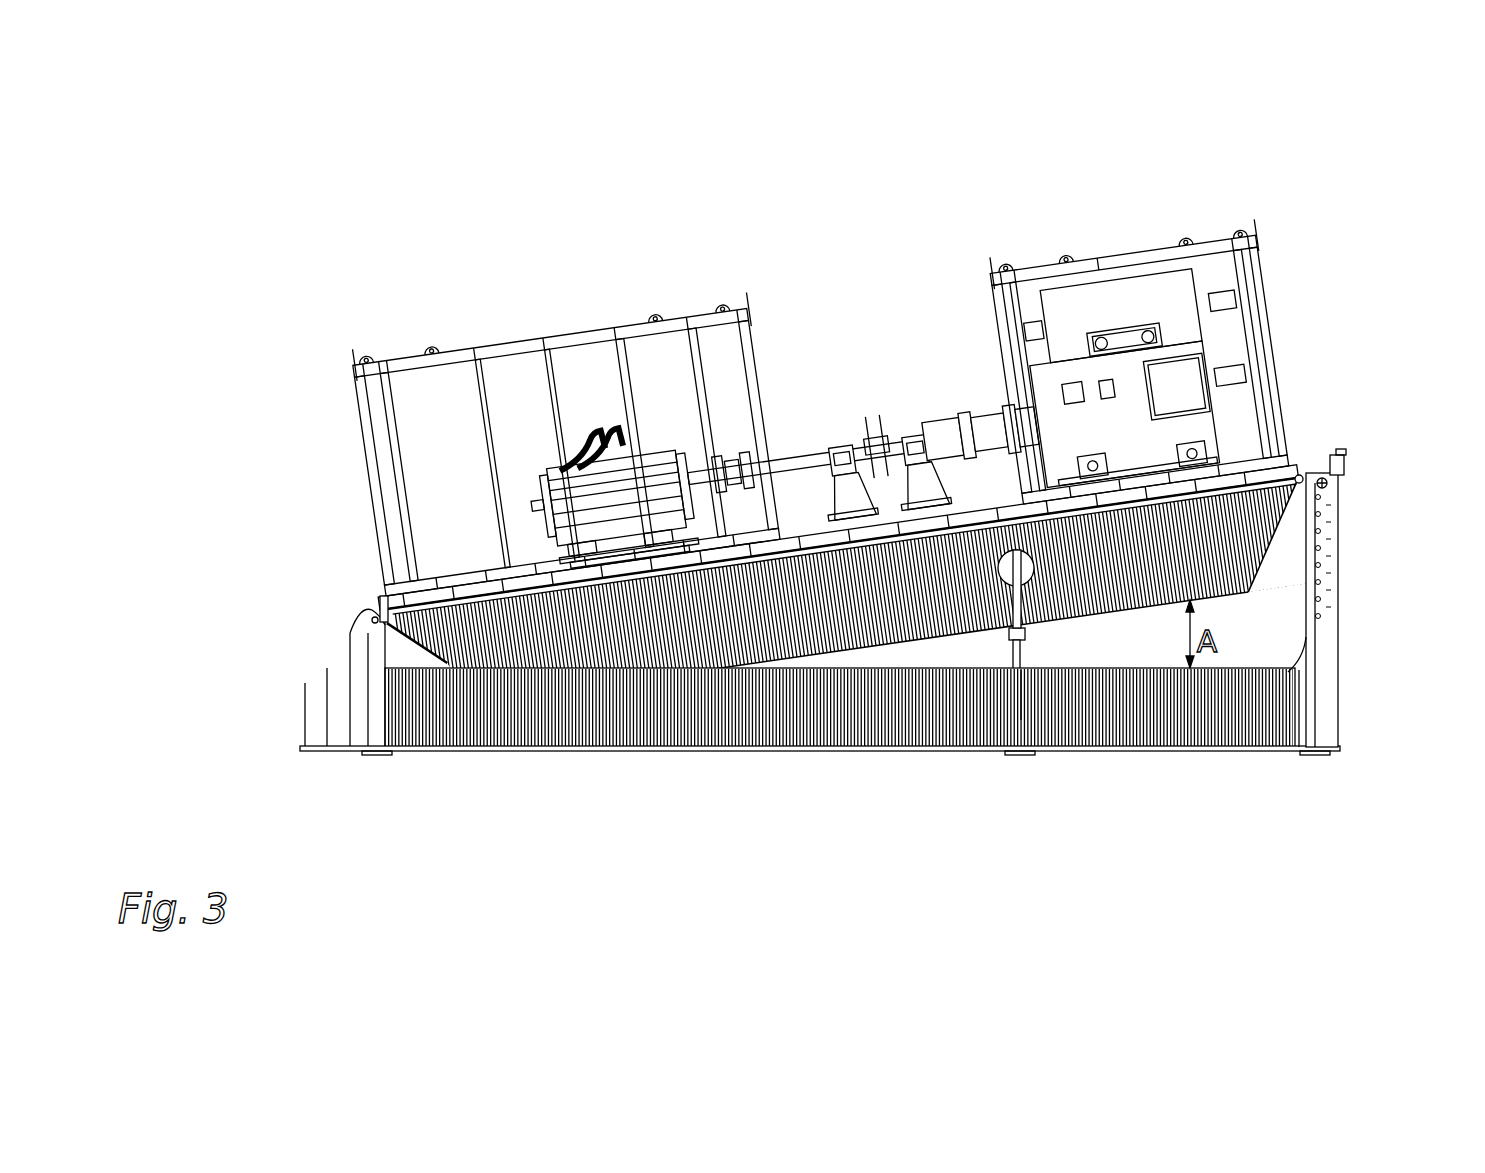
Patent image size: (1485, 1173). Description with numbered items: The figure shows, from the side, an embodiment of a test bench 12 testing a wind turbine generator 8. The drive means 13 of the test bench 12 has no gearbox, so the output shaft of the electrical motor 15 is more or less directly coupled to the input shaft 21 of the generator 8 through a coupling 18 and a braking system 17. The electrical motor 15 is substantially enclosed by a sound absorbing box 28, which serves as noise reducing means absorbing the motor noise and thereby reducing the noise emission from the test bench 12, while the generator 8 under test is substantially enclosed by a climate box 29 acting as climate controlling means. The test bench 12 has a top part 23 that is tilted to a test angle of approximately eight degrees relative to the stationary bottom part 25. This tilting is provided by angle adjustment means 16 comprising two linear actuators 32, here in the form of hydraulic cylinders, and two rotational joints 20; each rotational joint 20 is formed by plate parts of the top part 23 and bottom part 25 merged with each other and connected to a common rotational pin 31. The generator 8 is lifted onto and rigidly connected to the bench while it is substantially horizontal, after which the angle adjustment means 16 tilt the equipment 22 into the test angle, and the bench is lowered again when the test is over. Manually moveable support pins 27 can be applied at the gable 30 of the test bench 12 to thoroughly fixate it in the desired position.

The wind turbine generator 8 is at (652, 468).
The test bench 12 is at (272, 310).
The drive means 13 is at (1033, 307).
The electrical motor 15 is at (1143, 313).
The angle adjustment means 16 is at (1020, 650).
The braking system 17 is at (875, 432).
The coupling 18 is at (958, 415).
The rotational joint 20 is at (373, 618).
The input shaft 21 is at (733, 465).
The equipment 22 is at (558, 458).
The top part 23 is at (840, 597).
The bottom part 25 is at (672, 712).
The support pin 27 is at (1326, 486).
The sound absorbing box 28 is at (1110, 262).
The climate box 29 is at (576, 333).
The gable 30 is at (1322, 672).
The rotational pin 31 is at (374, 616).
The linear actuator 32 is at (1007, 635).